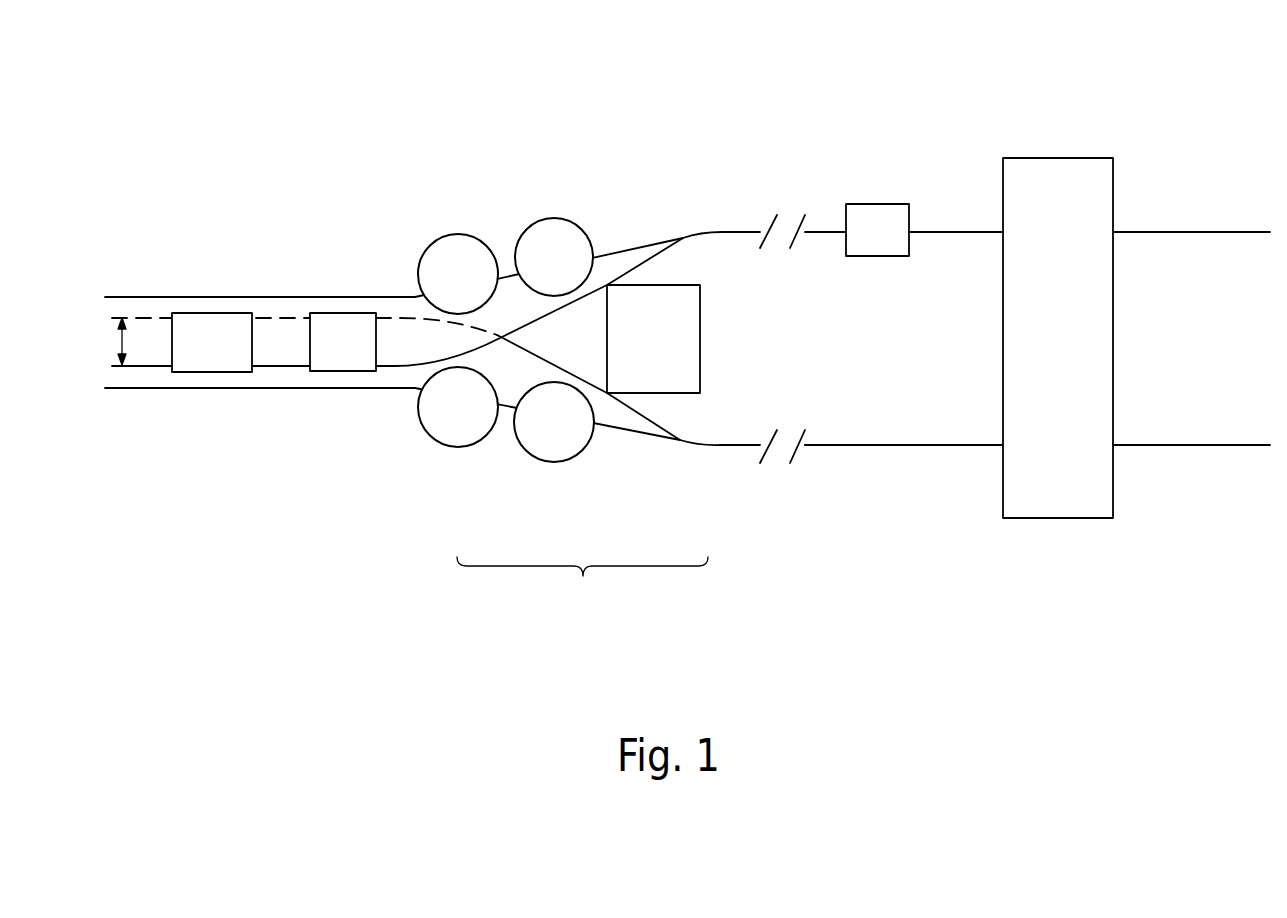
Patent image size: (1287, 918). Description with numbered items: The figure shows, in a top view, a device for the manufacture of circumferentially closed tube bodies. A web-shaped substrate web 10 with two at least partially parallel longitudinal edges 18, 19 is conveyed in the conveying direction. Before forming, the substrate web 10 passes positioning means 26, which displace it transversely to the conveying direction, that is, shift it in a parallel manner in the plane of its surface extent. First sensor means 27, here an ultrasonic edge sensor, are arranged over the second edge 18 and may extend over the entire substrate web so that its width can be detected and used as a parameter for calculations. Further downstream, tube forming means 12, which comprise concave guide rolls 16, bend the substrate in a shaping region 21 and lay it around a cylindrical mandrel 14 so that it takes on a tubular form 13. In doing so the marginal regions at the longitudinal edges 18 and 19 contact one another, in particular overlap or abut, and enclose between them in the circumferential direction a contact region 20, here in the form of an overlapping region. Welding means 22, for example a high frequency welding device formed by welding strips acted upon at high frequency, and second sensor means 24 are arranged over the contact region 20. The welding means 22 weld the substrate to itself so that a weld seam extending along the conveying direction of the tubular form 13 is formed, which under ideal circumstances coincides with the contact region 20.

The substrate web 10 is at (873, 427).
The tube forming means 12 is at (488, 96).
The tubular form 13 is at (250, 388).
The cylindrical mandrel 14 is at (697, 393).
The concave guide rolls 16 is at (458, 234).
The second longitudinal edge 18 is at (395, 366).
The first longitudinal edge 19 is at (410, 318).
The contact region 20 is at (105, 341).
The shaping region 21 is at (582, 581).
The welding means 22 is at (210, 313).
The second sensor means 24 is at (320, 313).
The positioning means 26 is at (1058, 158).
The first sensor means 27 is at (877, 204).